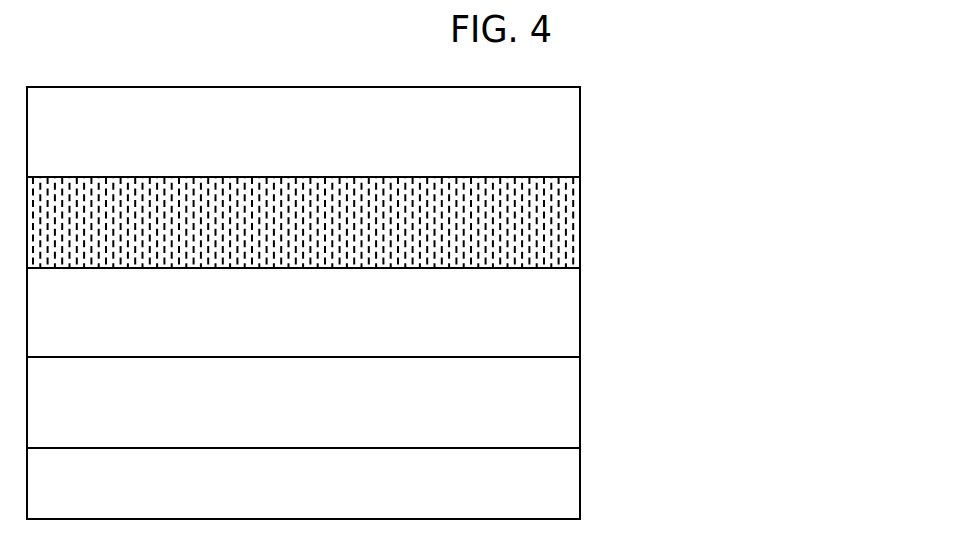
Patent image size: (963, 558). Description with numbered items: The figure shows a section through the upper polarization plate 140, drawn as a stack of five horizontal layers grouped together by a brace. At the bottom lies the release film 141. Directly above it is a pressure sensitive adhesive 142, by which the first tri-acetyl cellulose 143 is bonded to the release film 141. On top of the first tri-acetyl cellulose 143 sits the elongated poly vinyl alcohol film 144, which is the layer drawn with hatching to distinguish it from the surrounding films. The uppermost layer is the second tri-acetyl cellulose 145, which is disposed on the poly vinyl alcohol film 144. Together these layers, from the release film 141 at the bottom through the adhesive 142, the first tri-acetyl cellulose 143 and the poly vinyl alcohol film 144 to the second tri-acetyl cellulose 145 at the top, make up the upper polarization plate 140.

The upper polarization plate 140 is at (760, 105).
The release film 141 is at (382, 482).
The pressure sensitive adhesive 142 is at (382, 402).
The first tri-acetyl cellulose 143 is at (384, 312).
The elongated poly vinyl alcohol film 144 is at (382, 222).
The second tri-acetyl cellulose 145 is at (384, 132).